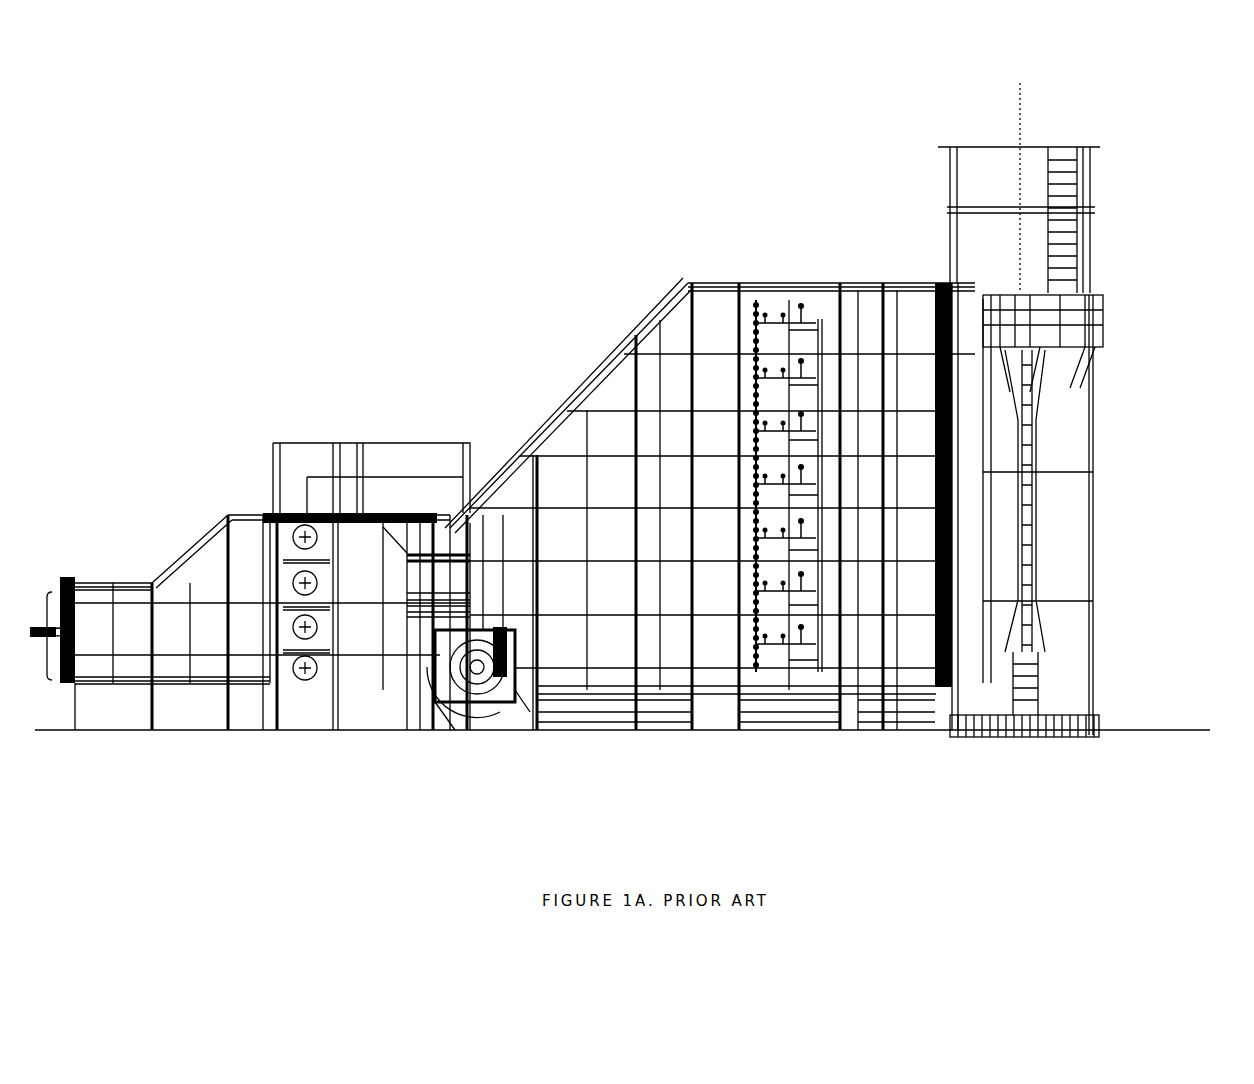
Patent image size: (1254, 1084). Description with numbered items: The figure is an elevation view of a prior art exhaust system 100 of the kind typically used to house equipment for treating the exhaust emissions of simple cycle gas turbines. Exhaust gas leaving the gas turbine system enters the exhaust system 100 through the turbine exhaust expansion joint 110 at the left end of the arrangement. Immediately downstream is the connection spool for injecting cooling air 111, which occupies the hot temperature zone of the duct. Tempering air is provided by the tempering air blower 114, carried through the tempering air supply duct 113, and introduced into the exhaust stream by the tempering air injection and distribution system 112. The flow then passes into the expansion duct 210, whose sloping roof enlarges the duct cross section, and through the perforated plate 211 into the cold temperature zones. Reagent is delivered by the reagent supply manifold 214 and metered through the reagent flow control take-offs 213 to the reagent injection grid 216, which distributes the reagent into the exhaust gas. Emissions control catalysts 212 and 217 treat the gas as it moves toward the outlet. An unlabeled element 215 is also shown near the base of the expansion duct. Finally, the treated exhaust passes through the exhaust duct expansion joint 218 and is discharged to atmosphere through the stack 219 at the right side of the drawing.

The exhaust system 100 is at (668, 137).
The turbine exhaust expansion joint 110 is at (62, 578).
The connection spool for injecting cooling air 111 is at (190, 574).
The tempering air injection and distribution system 112 is at (290, 570).
The tempering air supply duct 113 is at (374, 440).
The tempering air blower 114 is at (492, 625).
The expansion duct 210 is at (583, 396).
The perforated plate 211 is at (661, 350).
The emissions control catalyst 212 is at (695, 274).
The reagent flow control take-offs 213 is at (776, 270).
The reagent supply manifold 214 is at (846, 264).
The furnace floor section 215 is at (632, 724).
The reagent injection grid 216 is at (789, 708).
The emissions control catalyst 217 is at (904, 688).
The exhaust duct expansion joint 218 is at (975, 692).
The stack 219 is at (1090, 703).